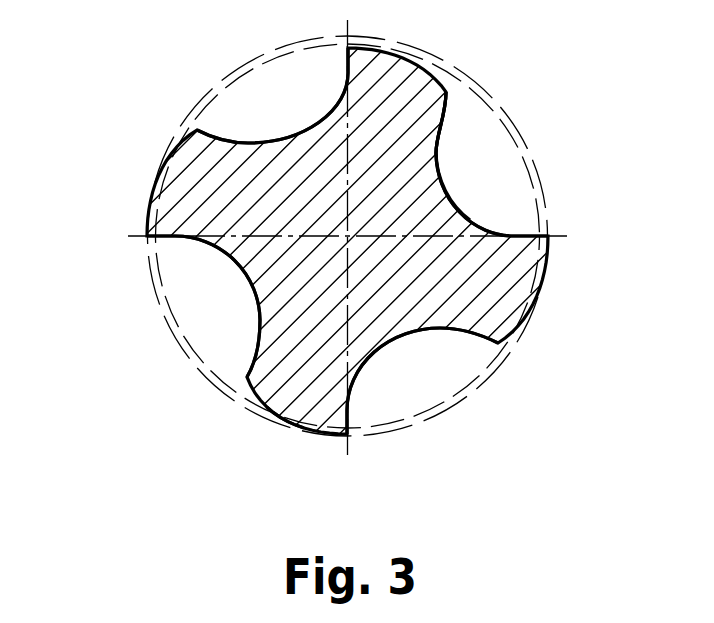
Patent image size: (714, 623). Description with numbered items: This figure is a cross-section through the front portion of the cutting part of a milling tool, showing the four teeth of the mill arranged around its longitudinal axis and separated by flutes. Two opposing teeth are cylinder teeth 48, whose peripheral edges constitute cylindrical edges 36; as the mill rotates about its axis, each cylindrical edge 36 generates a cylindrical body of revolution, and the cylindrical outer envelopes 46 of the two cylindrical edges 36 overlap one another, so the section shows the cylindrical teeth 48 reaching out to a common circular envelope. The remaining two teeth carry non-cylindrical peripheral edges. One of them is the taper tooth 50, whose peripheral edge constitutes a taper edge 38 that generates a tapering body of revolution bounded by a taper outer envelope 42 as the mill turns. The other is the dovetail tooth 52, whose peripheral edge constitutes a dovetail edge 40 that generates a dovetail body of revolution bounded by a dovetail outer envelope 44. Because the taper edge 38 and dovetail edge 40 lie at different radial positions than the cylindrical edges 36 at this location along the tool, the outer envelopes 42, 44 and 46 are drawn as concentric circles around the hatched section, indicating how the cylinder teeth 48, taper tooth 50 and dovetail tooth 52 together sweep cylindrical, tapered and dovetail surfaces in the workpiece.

The cylindrical edge 36 is at (193, 128).
The taper edge 38 is at (420, 113).
The dovetail edge 40 is at (252, 382).
The taper outer envelope 42 is at (433, 68).
The dovetail outer envelope 44 is at (312, 432).
The cylindrical outer envelope 46 is at (152, 187).
The cylinder tooth 48 is at (193, 178).
The taper tooth 50 is at (453, 123).
The dovetail tooth 52 is at (290, 380).